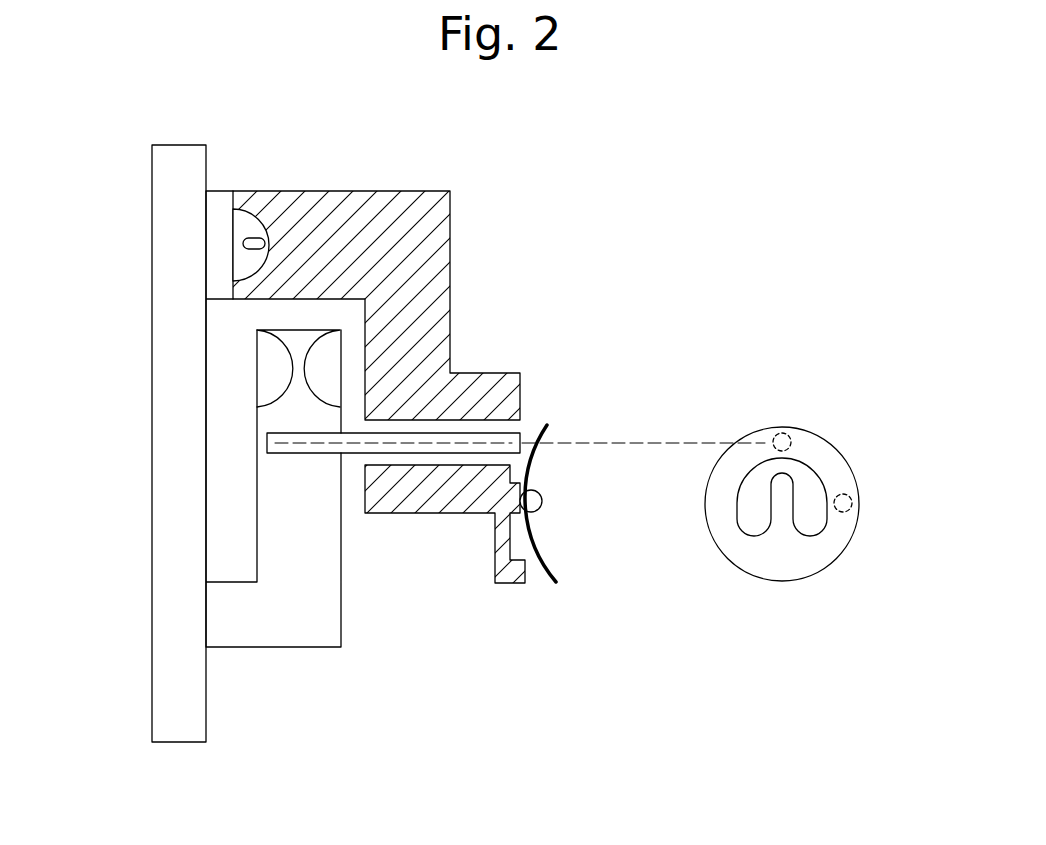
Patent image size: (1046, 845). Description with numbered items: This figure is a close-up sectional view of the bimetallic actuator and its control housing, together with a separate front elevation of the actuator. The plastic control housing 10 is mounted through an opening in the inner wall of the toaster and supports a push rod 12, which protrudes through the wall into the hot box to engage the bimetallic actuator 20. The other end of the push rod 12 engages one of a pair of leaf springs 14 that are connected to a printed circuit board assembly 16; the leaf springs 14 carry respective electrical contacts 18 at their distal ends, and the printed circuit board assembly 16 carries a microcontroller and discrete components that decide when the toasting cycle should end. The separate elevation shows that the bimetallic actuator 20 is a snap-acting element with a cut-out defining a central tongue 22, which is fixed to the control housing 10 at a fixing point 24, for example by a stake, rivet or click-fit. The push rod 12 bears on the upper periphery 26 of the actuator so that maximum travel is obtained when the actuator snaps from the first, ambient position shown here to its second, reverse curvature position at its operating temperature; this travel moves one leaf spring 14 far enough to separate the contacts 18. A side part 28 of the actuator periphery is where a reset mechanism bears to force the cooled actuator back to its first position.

The control housing 10 is at (367, 215).
The push rod 12 is at (485, 437).
The leaf springs 14 is at (287, 648).
The printed circuit board assembly 16 is at (178, 227).
The contacts 18 is at (270, 380).
The bimetallic actuator 20 is at (547, 562).
The central tongue 22 is at (777, 472).
The fixing point 24 is at (540, 498).
The upper periphery 26 is at (790, 428).
The side part of the periphery 28 is at (852, 510).